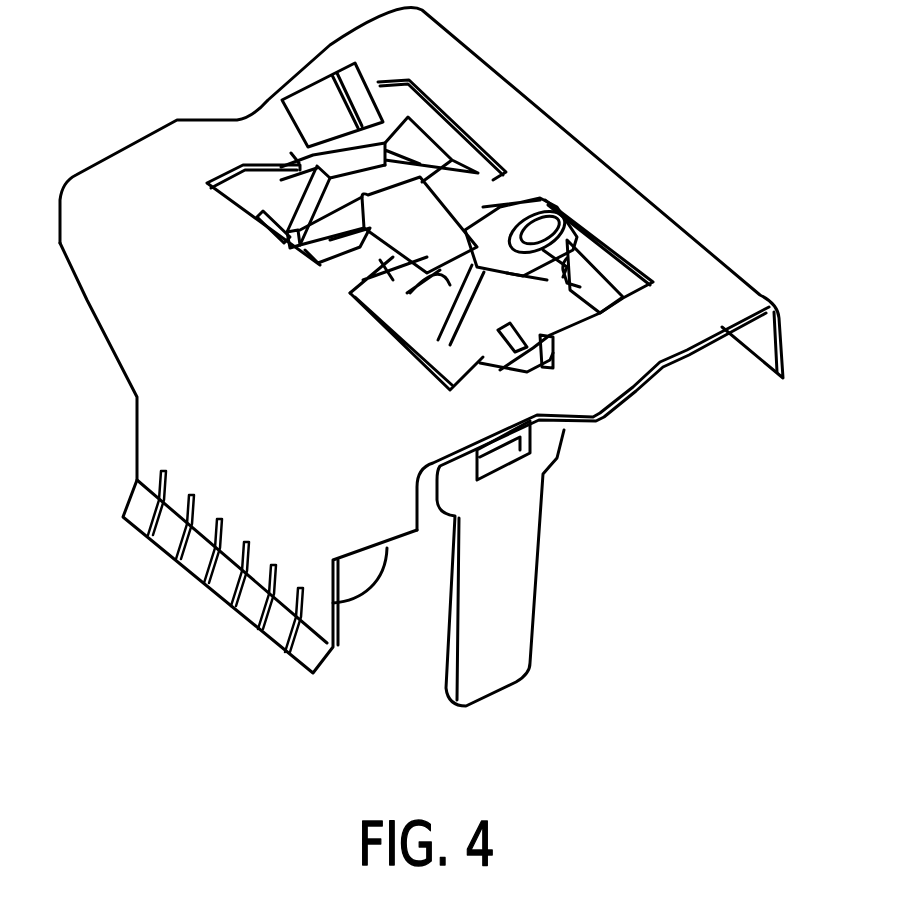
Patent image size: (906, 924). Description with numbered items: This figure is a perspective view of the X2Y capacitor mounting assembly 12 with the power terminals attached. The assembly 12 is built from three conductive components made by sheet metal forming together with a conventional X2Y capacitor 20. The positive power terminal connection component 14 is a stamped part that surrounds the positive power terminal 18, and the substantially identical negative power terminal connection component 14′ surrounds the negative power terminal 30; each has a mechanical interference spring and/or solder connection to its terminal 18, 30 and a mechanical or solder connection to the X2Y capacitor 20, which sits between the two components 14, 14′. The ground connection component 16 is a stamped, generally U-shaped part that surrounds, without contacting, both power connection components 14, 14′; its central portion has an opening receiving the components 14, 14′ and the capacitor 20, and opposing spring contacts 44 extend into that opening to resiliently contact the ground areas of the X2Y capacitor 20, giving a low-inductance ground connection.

The X2Y capacitor mounting assembly 12 is at (683, 156).
The positive power terminal connection component 14 is at (425, 143).
The negative power terminal connection component 14′ is at (587, 280).
The ground connection component 16 is at (294, 420).
The positive power terminal 18 is at (298, 102).
The X2Y capacitor 20 is at (392, 325).
The negative power terminal 30 is at (500, 268).
The spring contacts 44 is at (367, 253).